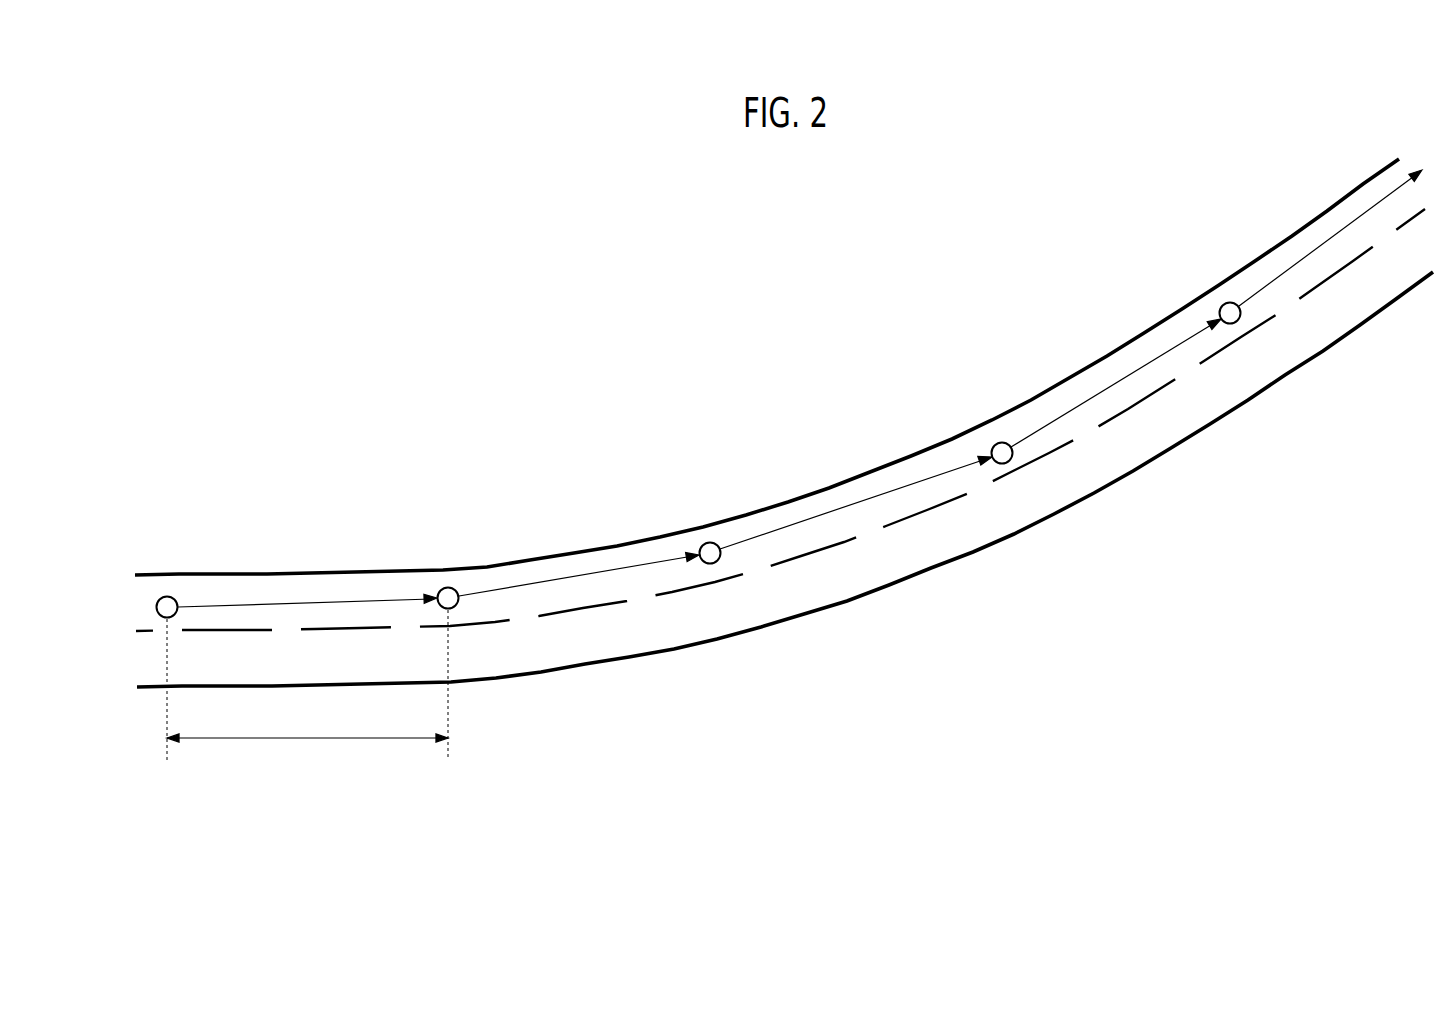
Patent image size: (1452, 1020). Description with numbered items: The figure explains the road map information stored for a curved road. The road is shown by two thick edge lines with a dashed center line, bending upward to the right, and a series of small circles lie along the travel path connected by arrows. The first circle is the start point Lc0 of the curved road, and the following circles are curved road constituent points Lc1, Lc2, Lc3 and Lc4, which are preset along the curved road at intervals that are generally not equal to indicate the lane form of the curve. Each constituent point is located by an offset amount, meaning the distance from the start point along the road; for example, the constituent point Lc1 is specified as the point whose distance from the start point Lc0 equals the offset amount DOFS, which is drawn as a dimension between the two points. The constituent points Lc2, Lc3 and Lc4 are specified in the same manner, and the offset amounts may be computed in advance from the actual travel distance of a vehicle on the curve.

The start point of the curved road Lc0 is at (166, 596).
The curved road constituent point Lc1 is at (448, 587).
The curved road constituent point Lc2 is at (707, 542).
The curved road constituent point Lc3 is at (997, 444).
The curved road constituent point Lc4 is at (1222, 305).
The offset amount DOFS is at (307, 695).